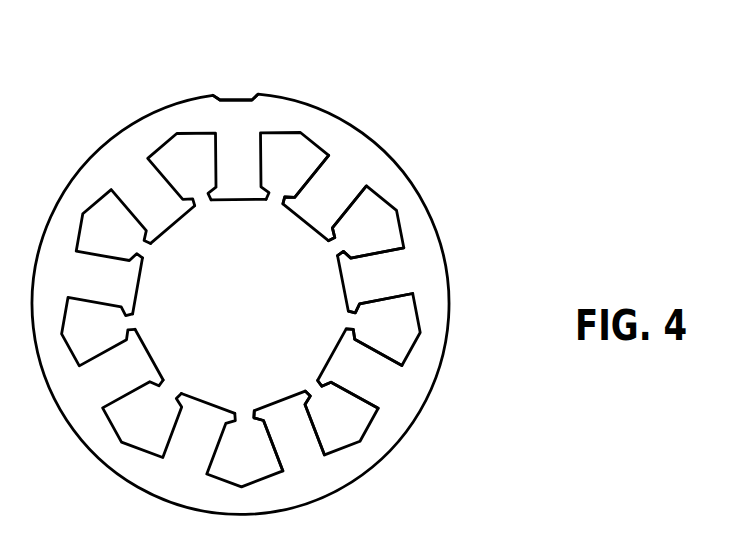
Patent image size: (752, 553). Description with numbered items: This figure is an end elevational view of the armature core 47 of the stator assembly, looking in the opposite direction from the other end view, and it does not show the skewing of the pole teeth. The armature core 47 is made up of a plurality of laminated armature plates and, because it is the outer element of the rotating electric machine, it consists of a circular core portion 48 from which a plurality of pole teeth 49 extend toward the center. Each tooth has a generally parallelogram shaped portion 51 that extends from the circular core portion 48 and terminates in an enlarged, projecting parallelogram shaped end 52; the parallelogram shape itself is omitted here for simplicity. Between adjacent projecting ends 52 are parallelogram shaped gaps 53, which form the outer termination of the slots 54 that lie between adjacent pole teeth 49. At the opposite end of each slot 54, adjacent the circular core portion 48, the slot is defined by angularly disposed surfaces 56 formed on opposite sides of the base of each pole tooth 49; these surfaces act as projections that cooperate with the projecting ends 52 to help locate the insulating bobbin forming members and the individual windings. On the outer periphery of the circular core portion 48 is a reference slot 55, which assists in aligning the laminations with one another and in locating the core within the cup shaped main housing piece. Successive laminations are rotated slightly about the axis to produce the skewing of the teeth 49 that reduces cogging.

The armature core 47 is at (320, 108).
The circular core portion 48 is at (358, 148).
The pole teeth 49 is at (378, 391).
The parallelogram shaped portions 51 is at (398, 233).
The projecting parallelogram shaped ends 52 is at (292, 412).
The parallelogram shaped gaps 53 is at (331, 249).
The slots 54 is at (408, 322).
The reference slot 55 is at (240, 98).
The angularly disposed surfaces 56 is at (407, 295).